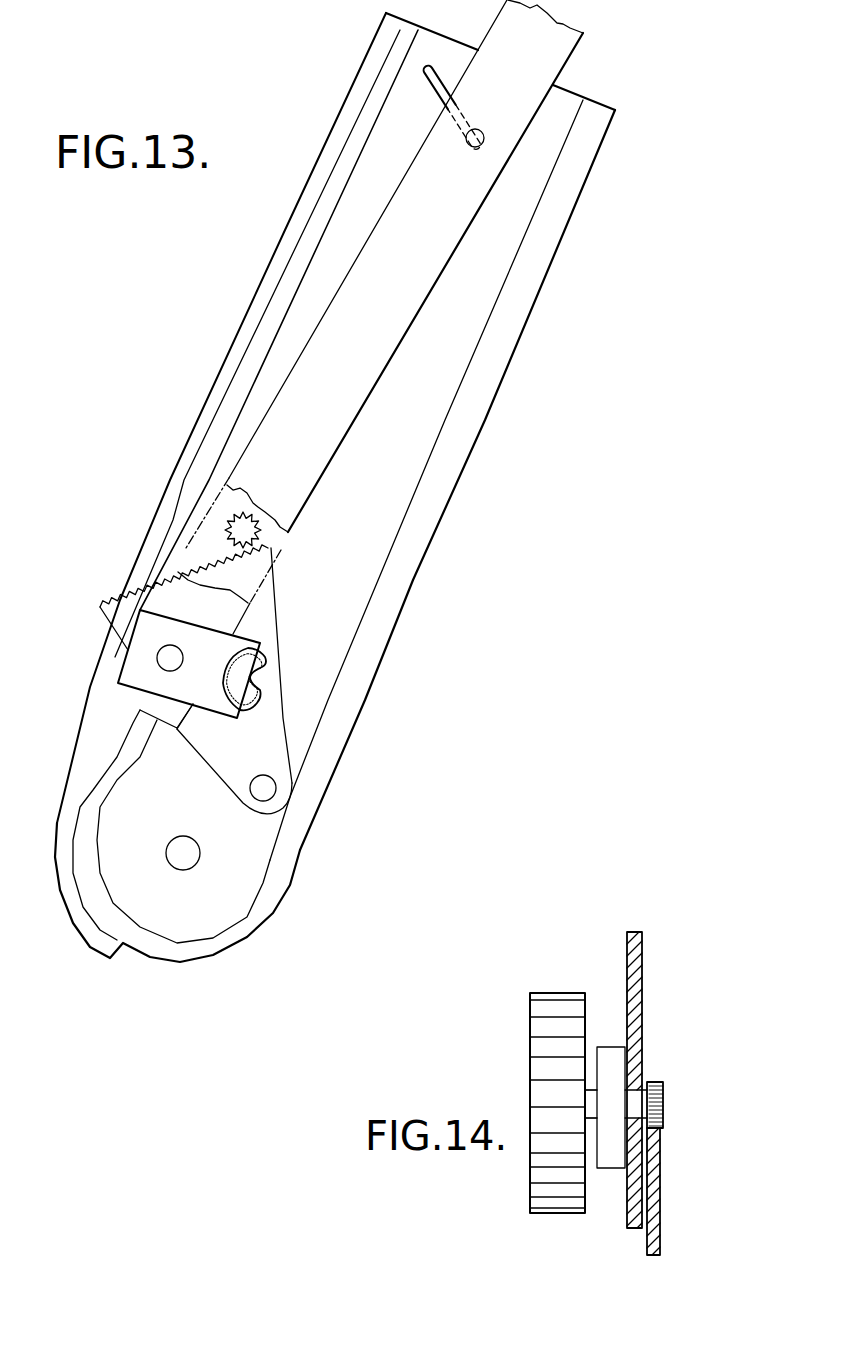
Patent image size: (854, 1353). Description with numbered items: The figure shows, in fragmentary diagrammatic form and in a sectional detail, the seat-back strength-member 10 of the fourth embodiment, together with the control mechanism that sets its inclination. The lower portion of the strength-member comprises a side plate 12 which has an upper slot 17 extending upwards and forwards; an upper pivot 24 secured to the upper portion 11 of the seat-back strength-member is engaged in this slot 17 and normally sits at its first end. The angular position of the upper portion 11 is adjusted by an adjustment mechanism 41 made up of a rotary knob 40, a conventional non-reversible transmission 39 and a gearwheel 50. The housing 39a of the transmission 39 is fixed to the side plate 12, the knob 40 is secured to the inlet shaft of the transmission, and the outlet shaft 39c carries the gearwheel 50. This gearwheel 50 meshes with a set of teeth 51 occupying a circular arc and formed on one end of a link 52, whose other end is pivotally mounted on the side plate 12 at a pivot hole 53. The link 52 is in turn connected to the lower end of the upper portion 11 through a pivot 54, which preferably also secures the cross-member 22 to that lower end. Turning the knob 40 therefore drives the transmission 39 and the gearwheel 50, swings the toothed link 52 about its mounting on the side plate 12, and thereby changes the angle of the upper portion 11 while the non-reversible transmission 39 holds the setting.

In FIG. 13, the hand tool 10 is at (442, 472).
In FIG. 13, the upper portion of the seat-back strength-member 11 is at (338, 411).
In FIG. 13, the side plate 12 is at (204, 833).
In FIG. 14, the side plate 12 is at (672, 1080).
In FIG. 13, the upper slot 17 is at (391, 97).
In FIG. 13, the cross-member 22 is at (335, 679).
In FIG. 13, the upper pivot 24 is at (555, 171).
In FIG. 14, the non-reversible transmission 39 is at (591, 1197).
In FIG. 14, the housing 39a is at (595, 1027).
In FIG. 14, the outlet shaft 39c is at (645, 1066).
In FIG. 14, the rotary knob 40 is at (515, 1100).
In FIG. 14, the adjustment mechanism 41 is at (497, 1259).
In FIG. 13, the gearwheel 50 is at (368, 540).
In FIG. 14, the gearwheel 50 is at (699, 1097).
In FIG. 13, the set of teeth 51 is at (172, 590).
In FIG. 13, the link 52 is at (298, 681).
In FIG. 14, the link 52 is at (688, 1191).
In FIG. 13, the pivot hole 53 is at (321, 813).
In FIG. 13, the pivot 54 is at (152, 664).